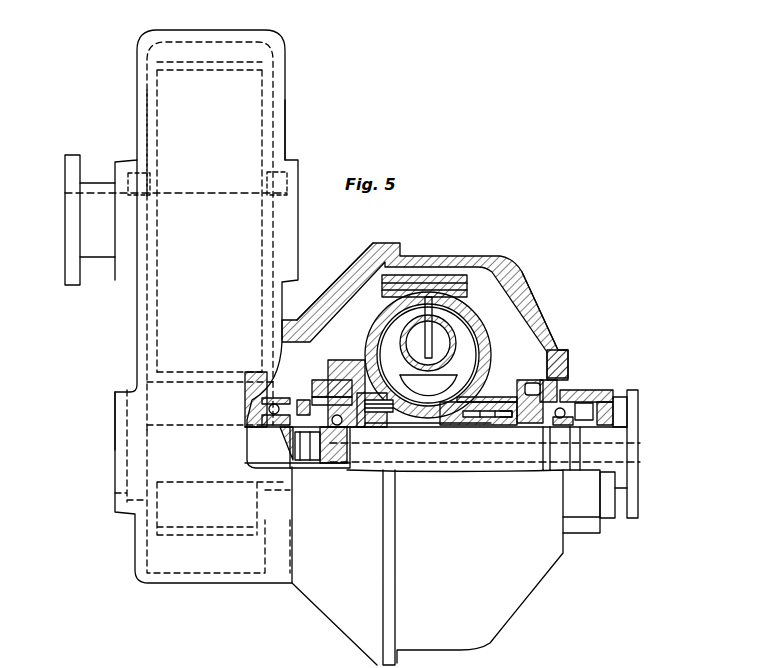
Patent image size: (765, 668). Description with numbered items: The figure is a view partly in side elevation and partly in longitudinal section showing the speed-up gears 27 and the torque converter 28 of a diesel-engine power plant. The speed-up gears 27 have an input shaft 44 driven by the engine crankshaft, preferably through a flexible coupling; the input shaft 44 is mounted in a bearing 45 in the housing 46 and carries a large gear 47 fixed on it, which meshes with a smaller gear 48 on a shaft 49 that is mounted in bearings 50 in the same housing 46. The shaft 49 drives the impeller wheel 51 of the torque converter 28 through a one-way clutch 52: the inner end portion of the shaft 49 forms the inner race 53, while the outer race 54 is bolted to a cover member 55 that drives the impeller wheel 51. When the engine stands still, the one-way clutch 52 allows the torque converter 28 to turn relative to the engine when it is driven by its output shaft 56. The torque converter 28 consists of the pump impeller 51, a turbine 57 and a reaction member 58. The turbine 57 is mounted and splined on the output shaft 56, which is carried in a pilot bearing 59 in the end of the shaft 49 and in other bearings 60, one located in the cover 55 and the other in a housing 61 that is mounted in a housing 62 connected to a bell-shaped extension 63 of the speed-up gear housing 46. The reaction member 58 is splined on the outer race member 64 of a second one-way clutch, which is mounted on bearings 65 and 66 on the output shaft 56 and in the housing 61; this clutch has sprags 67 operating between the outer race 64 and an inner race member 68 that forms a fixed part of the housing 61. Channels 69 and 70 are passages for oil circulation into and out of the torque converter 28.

The speed-up gears 27 is at (252, 89).
The torque converter 28 is at (470, 302).
The input shaft 44 is at (196, 192).
The bearing 45 is at (291, 172).
The housing 46 is at (286, 120).
The large gear 47 is at (147, 87).
The smaller gear 48 is at (147, 385).
The shaft 49 is at (248, 446).
The bearings 50 is at (258, 391).
The impeller wheel 51 is at (478, 328).
The one-way clutch 52 is at (305, 398).
The inner race 53 is at (323, 437).
The outer race 54 is at (327, 380).
The cover member 55 is at (372, 330).
The output shaft 56 is at (462, 452).
The turbine 57 is at (403, 312).
The reaction member 58 is at (442, 387).
The pilot bearing 59 is at (300, 440).
The bearings 60 is at (557, 384).
The housing 61 is at (591, 390).
The housing 62 is at (544, 330).
The bell-shaped extension 63 is at (350, 268).
The outer race member 64 is at (470, 397).
The bearing 65 is at (430, 427).
The bearing 66 is at (509, 418).
The sprags 67 is at (486, 418).
The inner race member 68 is at (535, 418).
The channel 69 is at (532, 383).
The channel 70 is at (638, 425).